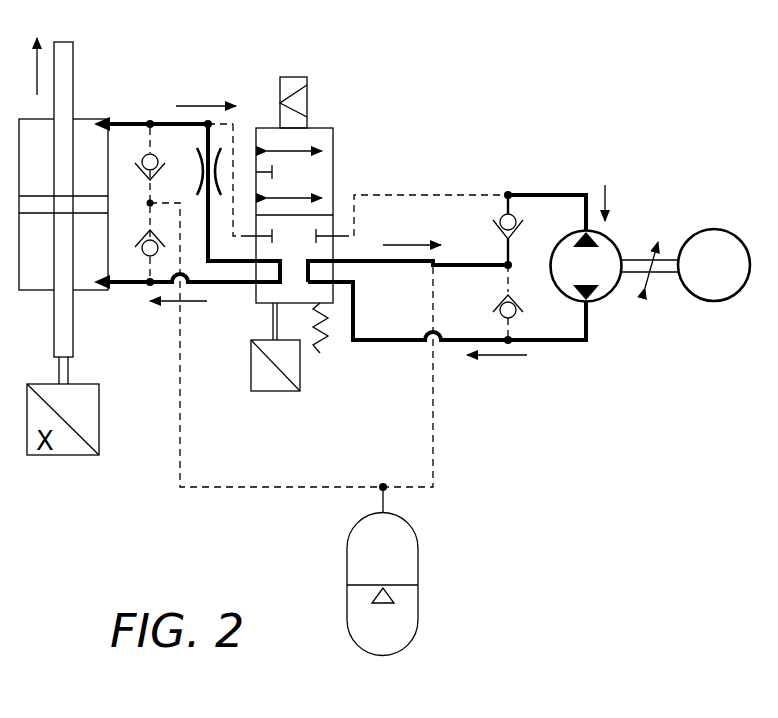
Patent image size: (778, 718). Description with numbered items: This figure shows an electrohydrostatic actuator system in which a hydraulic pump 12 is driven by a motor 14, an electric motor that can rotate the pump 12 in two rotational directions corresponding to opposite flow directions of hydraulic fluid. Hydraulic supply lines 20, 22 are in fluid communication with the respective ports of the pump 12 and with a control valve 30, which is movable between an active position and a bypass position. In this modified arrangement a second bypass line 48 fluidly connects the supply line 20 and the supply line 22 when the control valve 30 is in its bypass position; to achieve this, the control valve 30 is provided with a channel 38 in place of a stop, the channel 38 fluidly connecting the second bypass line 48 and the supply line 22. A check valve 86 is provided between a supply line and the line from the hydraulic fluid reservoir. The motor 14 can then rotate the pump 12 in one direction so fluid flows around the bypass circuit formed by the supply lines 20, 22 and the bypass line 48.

The hydraulic pump 12 is at (616, 292).
The motor 14 is at (714, 302).
The hydraulic supply line 20 is at (470, 194).
The hydraulic supply line 22 is at (552, 342).
The control valve 30 is at (333, 140).
The channel 38 is at (307, 273).
The second bypass line 48 is at (363, 259).
The check valve 86 is at (519, 212).